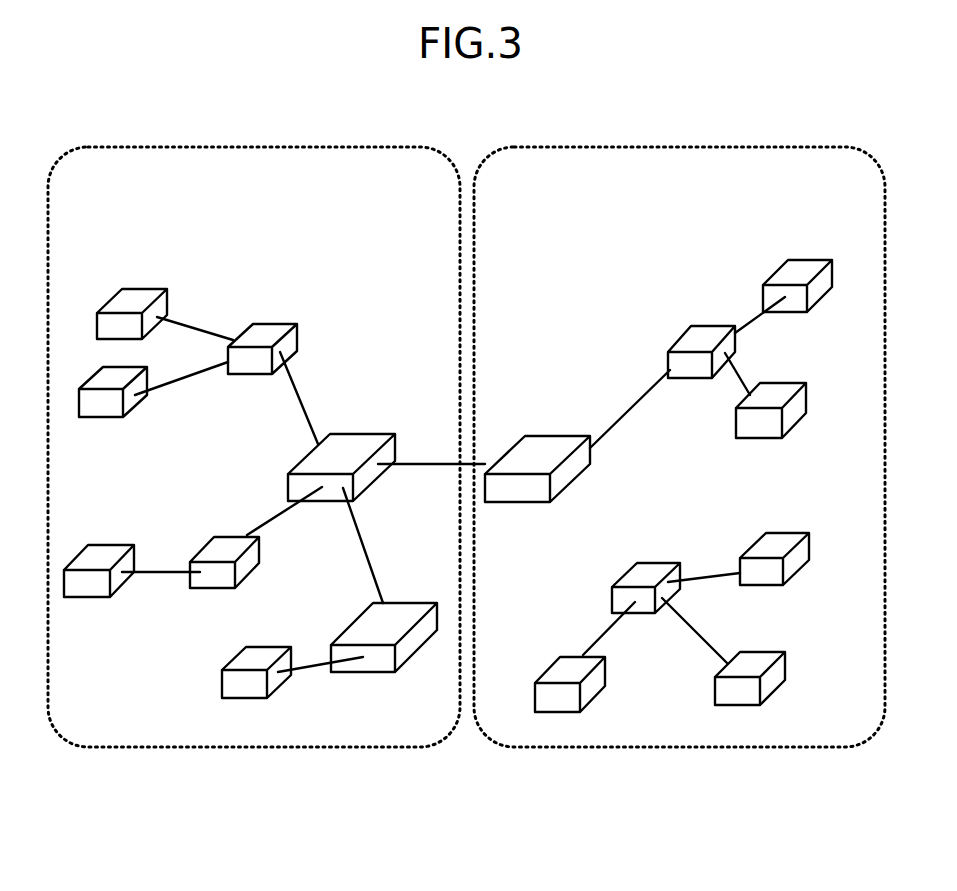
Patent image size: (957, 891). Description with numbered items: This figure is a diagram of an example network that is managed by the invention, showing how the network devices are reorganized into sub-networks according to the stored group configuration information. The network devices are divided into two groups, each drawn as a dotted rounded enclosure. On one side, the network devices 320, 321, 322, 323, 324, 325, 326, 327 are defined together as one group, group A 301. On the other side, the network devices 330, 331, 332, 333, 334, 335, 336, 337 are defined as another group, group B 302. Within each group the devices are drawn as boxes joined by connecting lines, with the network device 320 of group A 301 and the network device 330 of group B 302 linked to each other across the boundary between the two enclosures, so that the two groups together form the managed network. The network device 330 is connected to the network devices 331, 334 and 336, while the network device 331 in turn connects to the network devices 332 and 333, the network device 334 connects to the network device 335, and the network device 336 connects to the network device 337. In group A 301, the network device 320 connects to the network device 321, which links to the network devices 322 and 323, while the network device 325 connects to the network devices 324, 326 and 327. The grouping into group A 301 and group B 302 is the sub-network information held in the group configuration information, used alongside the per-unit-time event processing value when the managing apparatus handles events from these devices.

The group A 301 is at (679, 447).
The group B 302 is at (254, 447).
The network device 320 is at (560, 436).
The network device 321 is at (716, 326).
The network device 322 is at (812, 260).
The network device 323 is at (784, 383).
The network device 324 is at (787, 533).
The network device 325 is at (660, 563).
The network device 326 is at (766, 652).
The network device 327 is at (570, 657).
The network device 330 is at (364, 434).
The network device 331 is at (276, 324).
The network device 332 is at (147, 289).
The network device 333 is at (100, 417).
The network device 334 is at (227, 537).
The network device 335 is at (115, 545).
The network device 336 is at (405, 603).
The network device 337 is at (258, 647).